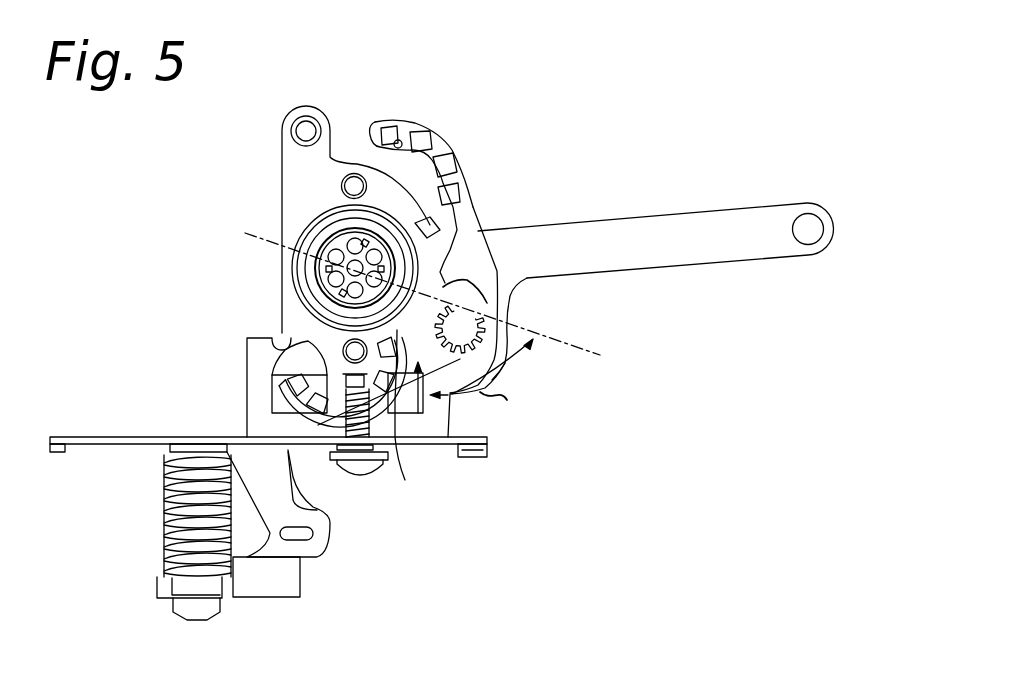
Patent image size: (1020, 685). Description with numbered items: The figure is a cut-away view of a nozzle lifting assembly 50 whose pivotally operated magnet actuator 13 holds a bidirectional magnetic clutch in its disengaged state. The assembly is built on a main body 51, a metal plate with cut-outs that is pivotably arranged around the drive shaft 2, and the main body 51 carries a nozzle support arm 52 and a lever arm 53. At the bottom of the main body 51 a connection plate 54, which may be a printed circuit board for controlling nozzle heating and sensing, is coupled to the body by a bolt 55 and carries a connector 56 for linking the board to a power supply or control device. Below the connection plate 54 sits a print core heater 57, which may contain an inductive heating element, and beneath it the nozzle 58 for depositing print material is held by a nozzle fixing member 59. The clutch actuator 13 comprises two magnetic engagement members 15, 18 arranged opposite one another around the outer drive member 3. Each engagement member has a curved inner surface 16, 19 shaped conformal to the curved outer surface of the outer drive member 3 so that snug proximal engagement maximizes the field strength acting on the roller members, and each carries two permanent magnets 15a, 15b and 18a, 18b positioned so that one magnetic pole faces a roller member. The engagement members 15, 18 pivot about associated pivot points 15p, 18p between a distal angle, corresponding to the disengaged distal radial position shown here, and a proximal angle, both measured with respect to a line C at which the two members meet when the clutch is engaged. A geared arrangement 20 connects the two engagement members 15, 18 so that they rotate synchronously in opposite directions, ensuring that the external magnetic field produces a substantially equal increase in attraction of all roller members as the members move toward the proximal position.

The nozzle lifting assembly 50 is at (533, 69).
The main body 51 is at (297, 170).
The outer drive member 3 is at (325, 250).
The drive shaft 2 is at (335, 272).
The actuator 13 is at (478, 249).
The magnetic engagement member 18 is at (460, 172).
The permanent magnet 18a is at (447, 198).
The permanent magnet 18b is at (418, 133).
The pivot point 18p is at (470, 279).
The curved inner surface 19 is at (399, 140).
The lever arm 53 is at (735, 226).
The geared arrangement 20 is at (445, 290).
The magnetic engagement member 15 is at (335, 415).
The permanent magnet 15a is at (405, 480).
The permanent magnet 15b is at (322, 420).
The pivot point 15p is at (443, 337).
The curved inner surface 16 is at (286, 378).
The connection plate 54 is at (95, 440).
The bolt 55 is at (352, 455).
The connector 56 is at (487, 447).
The print core heater 57 is at (170, 517).
The nozzle 58 is at (185, 610).
The nozzle fixing member 59 is at (267, 588).
The nozzle support arm 52 is at (317, 553).
The line C is at (590, 350).